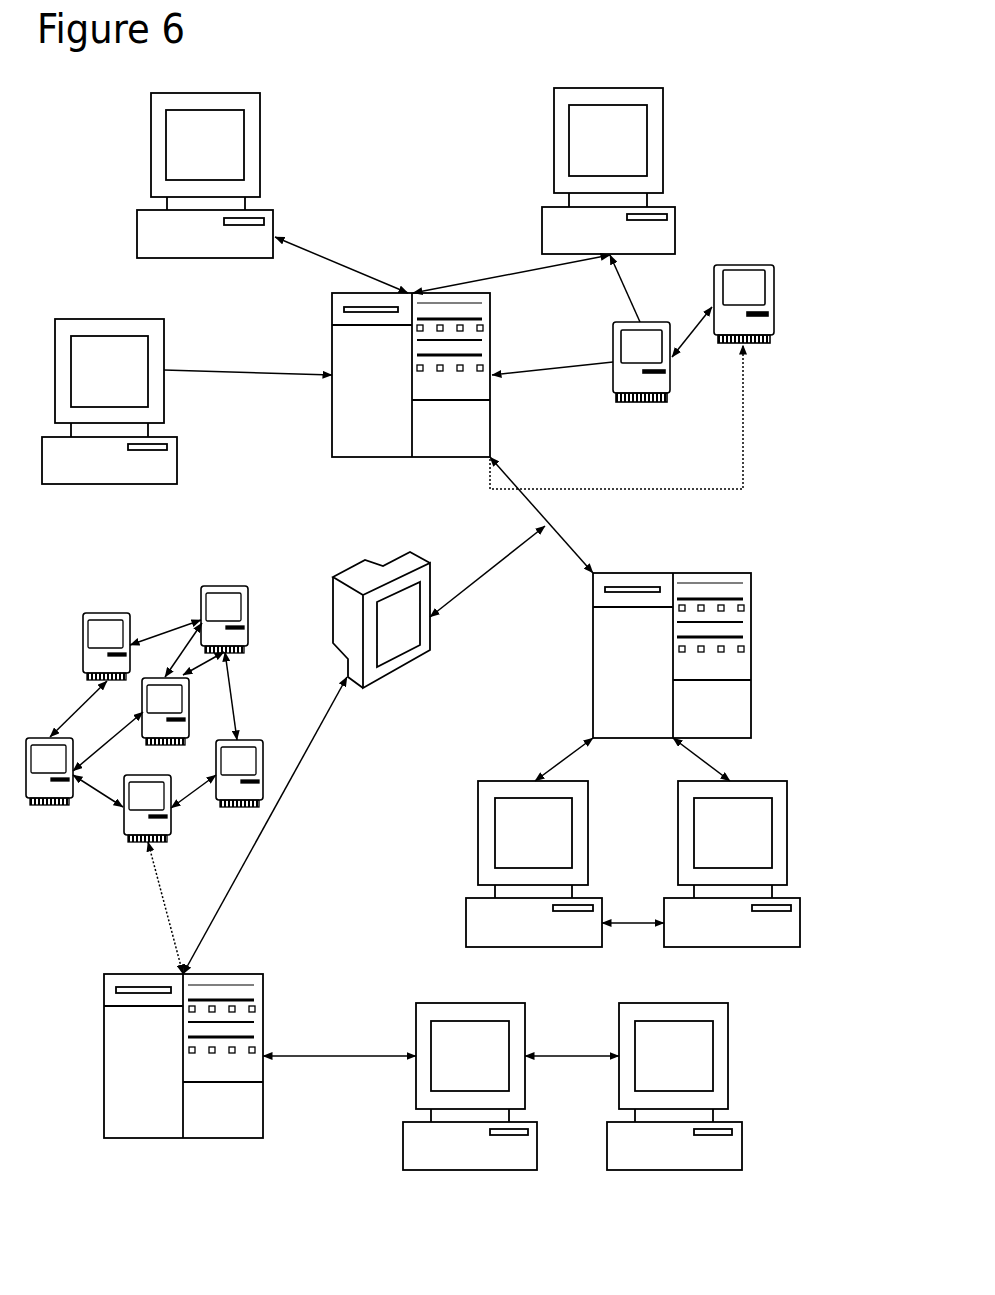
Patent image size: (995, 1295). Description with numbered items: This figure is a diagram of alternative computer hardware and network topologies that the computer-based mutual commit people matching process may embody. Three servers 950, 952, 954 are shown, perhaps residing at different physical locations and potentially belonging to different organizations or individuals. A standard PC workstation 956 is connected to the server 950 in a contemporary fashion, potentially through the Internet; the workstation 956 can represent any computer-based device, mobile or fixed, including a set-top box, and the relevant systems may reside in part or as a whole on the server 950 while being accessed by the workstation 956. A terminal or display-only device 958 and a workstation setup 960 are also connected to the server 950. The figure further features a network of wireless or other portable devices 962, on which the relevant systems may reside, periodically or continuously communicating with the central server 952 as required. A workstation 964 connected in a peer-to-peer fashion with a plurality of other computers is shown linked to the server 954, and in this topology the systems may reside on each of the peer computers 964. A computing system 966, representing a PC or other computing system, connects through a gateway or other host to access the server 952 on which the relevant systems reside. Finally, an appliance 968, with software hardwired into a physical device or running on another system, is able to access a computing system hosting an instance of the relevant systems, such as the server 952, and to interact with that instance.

The server 950 is at (495, 348).
The central server 952 is at (263, 1000).
The server 954 is at (751, 602).
The PC workstation 956 is at (260, 140).
The terminal or display-only device 958 is at (164, 352).
The workstation setup 960 is at (667, 168).
The network of wireless or other portable devices 962 is at (125, 615).
The workstation connected in a peer-to-peer fashion 964 is at (787, 856).
The computing system 966 is at (728, 1038).
The appliance 968 is at (427, 655).